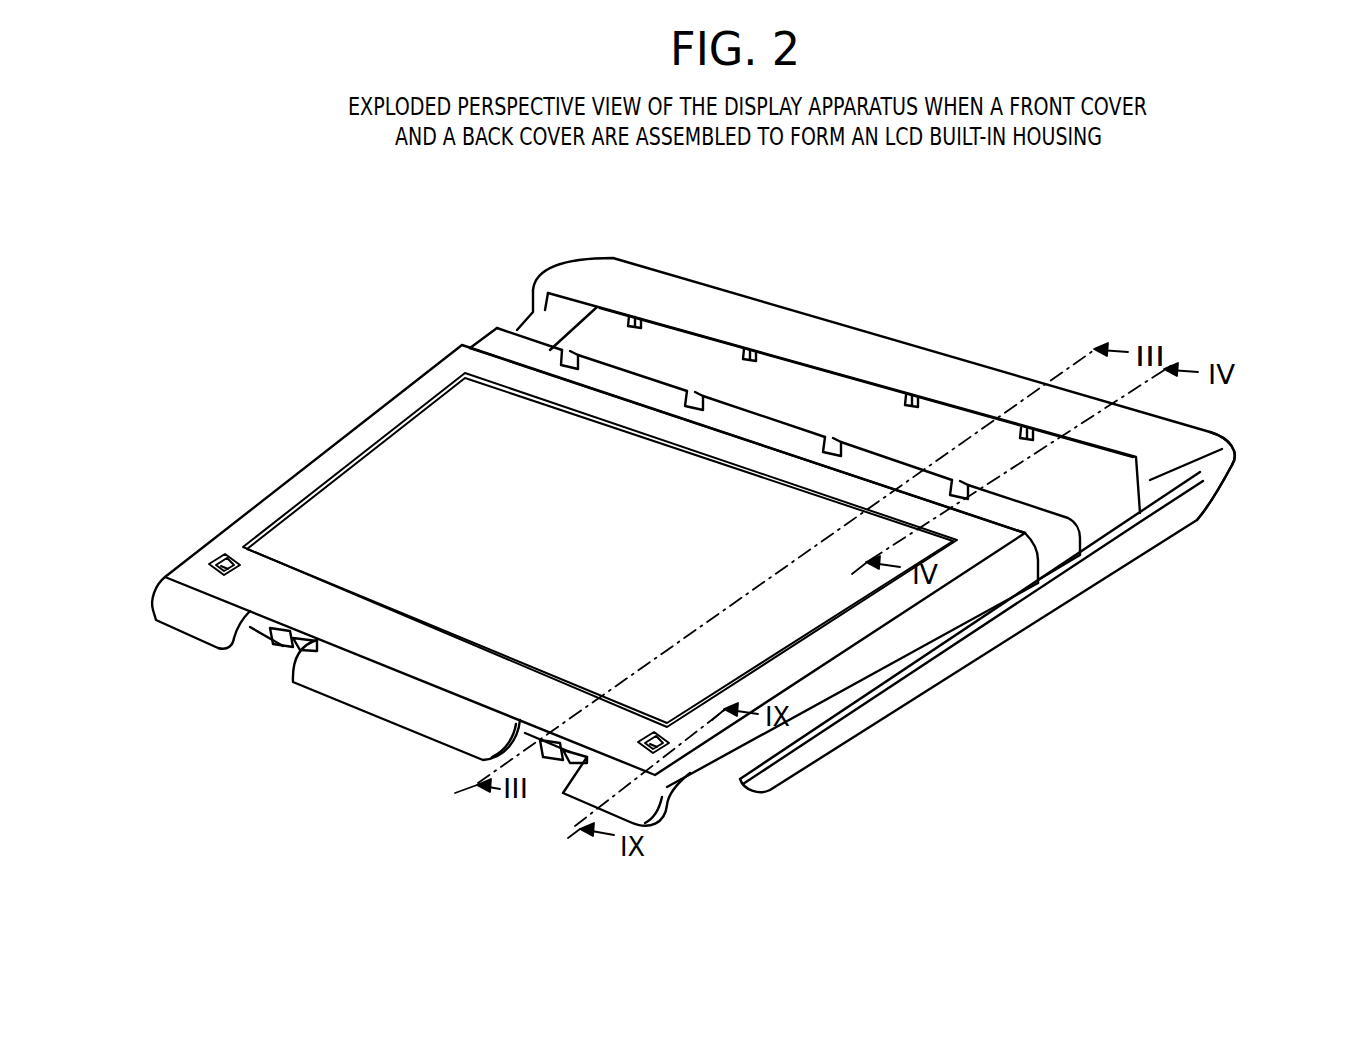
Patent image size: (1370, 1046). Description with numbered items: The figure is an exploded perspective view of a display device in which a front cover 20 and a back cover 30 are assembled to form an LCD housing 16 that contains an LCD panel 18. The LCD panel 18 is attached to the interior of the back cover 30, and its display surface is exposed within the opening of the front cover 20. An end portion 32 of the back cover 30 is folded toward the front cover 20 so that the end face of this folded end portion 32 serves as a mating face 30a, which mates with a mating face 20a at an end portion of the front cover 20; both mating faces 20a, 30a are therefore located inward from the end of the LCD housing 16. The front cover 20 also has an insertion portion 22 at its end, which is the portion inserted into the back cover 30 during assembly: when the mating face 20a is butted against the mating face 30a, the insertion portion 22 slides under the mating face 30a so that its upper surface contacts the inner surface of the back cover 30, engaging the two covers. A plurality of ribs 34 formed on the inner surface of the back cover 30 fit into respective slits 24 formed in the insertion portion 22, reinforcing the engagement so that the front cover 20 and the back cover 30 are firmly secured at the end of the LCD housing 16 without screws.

The LCD housing 16 is at (724, 498).
The LCD panel 18 is at (400, 474).
The front cover 20 is at (646, 498).
The mating face 20a is at (786, 456).
The insertion portion 22 is at (755, 427).
The slits 24 is at (700, 405).
The back cover 30 is at (876, 515).
The mating face 30a is at (858, 383).
The end portion 32 is at (1119, 402).
The ribs 34 is at (733, 368).